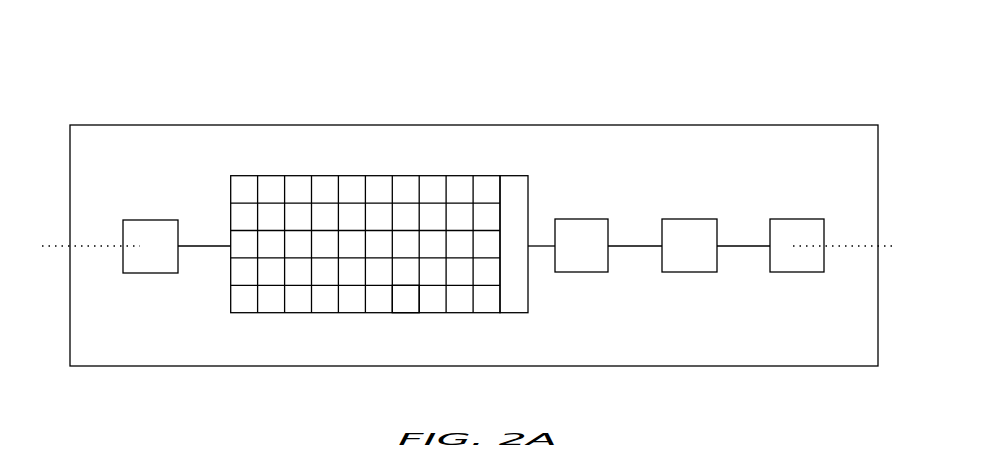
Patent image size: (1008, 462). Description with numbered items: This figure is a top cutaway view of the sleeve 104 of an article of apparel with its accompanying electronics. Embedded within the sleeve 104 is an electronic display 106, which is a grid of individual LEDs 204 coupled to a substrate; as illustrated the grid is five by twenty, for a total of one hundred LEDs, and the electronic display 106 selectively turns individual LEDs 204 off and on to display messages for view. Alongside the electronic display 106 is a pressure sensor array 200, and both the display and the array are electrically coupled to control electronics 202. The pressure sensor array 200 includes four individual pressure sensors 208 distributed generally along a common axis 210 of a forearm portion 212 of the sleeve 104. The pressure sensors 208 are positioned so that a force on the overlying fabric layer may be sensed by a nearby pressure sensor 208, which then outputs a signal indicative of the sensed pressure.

The sleeve 104 is at (775, 366).
The electronic display 106 is at (407, 310).
The pressure sensor array 200 is at (565, 138).
The control electronics 202 is at (517, 187).
The LEDs 204 is at (351, 295).
The pressure sensors 208 is at (152, 273).
The common axis 210 is at (83, 243).
The forearm portion 212 is at (218, 68).